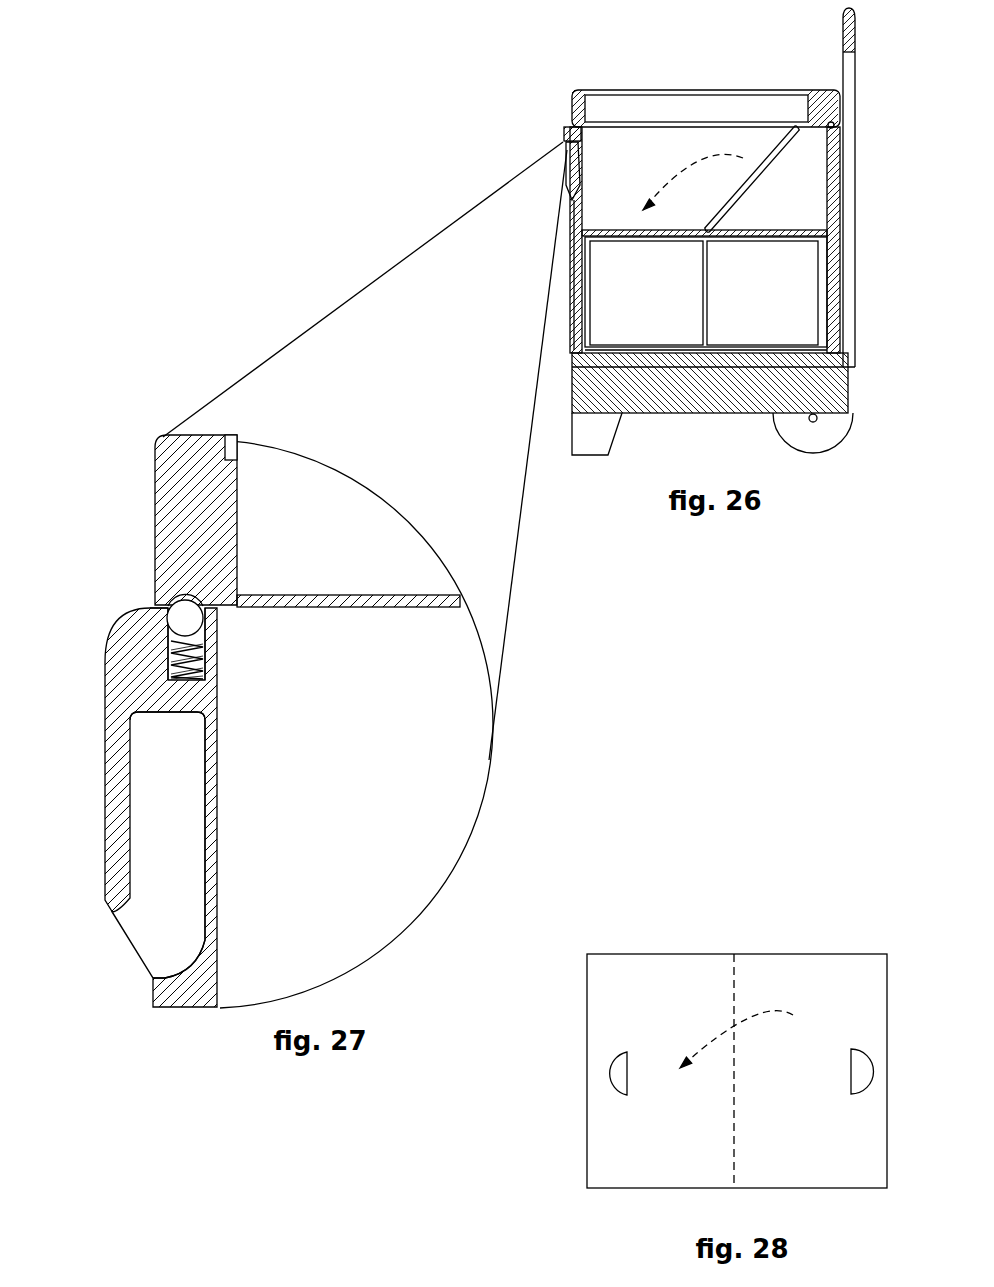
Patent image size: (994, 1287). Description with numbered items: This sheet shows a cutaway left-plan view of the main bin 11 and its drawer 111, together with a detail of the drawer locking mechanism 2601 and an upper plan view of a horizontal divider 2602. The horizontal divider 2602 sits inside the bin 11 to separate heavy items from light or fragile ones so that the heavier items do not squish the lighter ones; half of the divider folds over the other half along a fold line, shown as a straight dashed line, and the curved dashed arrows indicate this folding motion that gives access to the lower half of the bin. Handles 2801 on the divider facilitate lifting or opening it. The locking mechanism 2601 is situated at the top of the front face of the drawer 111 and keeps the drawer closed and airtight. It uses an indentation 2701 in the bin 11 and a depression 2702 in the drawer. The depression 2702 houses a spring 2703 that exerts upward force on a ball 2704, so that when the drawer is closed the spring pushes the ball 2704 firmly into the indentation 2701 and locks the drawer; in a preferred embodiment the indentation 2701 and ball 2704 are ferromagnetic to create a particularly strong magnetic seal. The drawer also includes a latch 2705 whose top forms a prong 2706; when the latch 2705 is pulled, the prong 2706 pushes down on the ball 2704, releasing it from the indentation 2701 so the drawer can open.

In FIG. 26, the main bin 11 is at (745, 82).
In FIG. 27, the main bin 11 is at (148, 518).
In FIG. 26, the drawer 111 is at (568, 233).
In FIG. 27, the drawer 111 is at (218, 862).
In FIG. 26, the locking mechanism 2601 is at (570, 125).
In FIG. 27, the locking mechanism 2601 is at (437, 893).
In FIG. 26, the horizontal divider 2602 is at (778, 175).
In FIG. 28, the horizontal divider 2602 is at (793, 943).
In FIG. 27, the indentation 2701 is at (186, 602).
In FIG. 27, the depression 2702 is at (205, 660).
In FIG. 27, the spring 2703 is at (170, 668).
In FIG. 27, the ball 2704 is at (193, 620).
In FIG. 27, the latch 2705 is at (108, 800).
In FIG. 27, the prong 2706 is at (155, 605).
In FIG. 28, the handles 2801 is at (603, 1077).